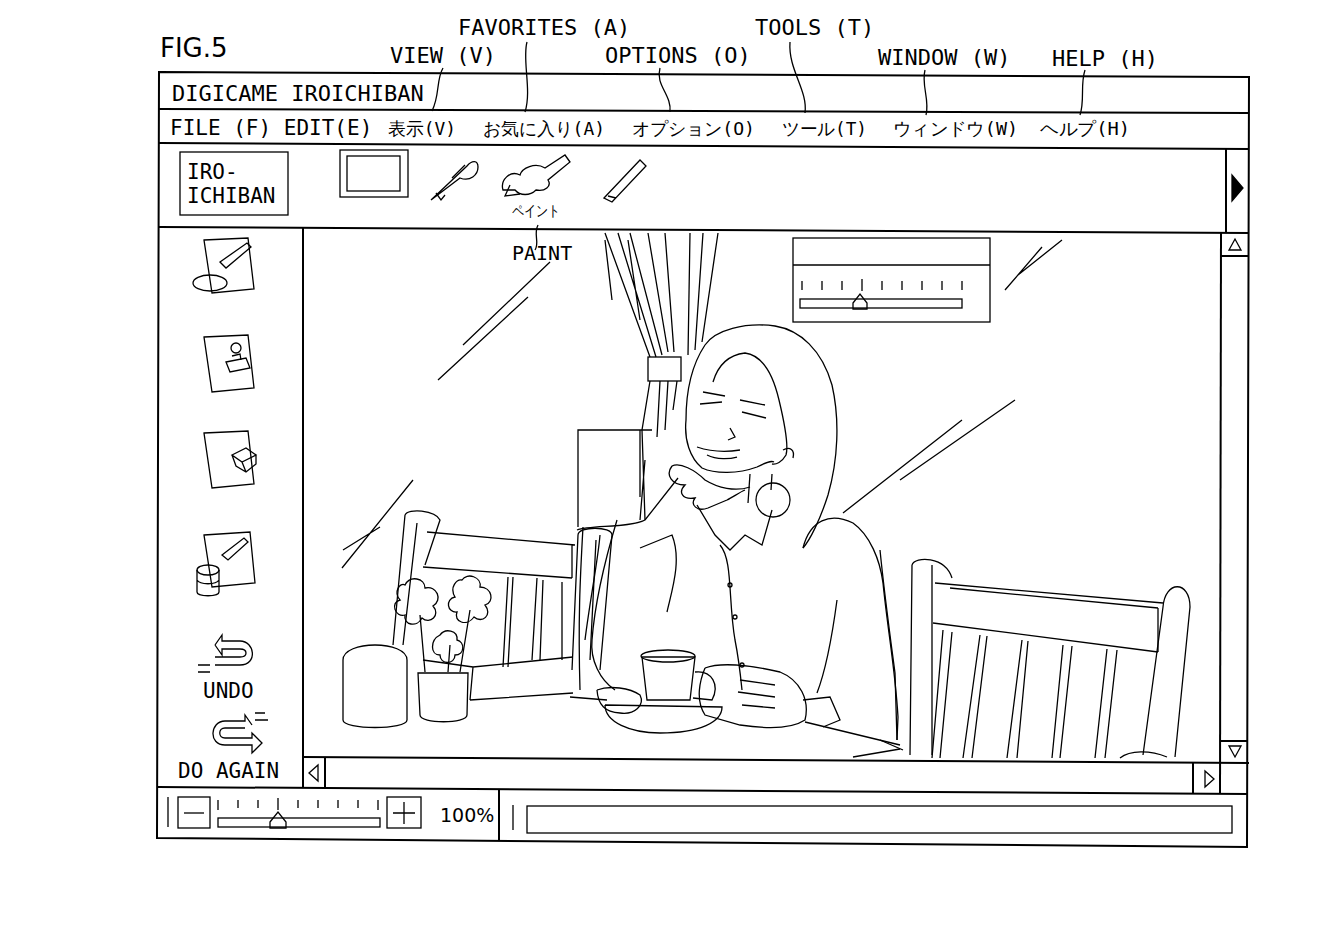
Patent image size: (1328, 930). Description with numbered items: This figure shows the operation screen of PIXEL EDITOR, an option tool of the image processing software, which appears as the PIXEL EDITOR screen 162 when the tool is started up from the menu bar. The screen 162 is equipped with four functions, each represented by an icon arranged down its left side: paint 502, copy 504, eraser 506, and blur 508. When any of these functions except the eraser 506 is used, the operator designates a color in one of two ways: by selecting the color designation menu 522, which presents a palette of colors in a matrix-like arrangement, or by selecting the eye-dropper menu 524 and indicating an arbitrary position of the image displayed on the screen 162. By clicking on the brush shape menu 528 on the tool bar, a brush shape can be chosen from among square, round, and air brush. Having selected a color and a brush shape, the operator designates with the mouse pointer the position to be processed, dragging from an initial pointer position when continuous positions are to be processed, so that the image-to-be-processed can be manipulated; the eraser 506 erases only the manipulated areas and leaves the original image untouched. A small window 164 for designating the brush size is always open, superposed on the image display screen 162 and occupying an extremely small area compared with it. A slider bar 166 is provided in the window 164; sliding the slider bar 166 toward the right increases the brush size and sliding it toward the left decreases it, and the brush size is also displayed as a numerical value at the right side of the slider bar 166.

The PIXEL EDITOR screen 162 is at (1197, 506).
The window for designating the brush size 164 is at (903, 282).
The slider bar 166 is at (942, 312).
The paint 502 is at (190, 312).
The copy 504 is at (190, 410).
The eraser 506 is at (190, 508).
The blur 508 is at (190, 616).
The color designation menu 522 is at (362, 225).
The eye-dropper menu 524 is at (455, 225).
The brush shape menu 528 is at (652, 194).